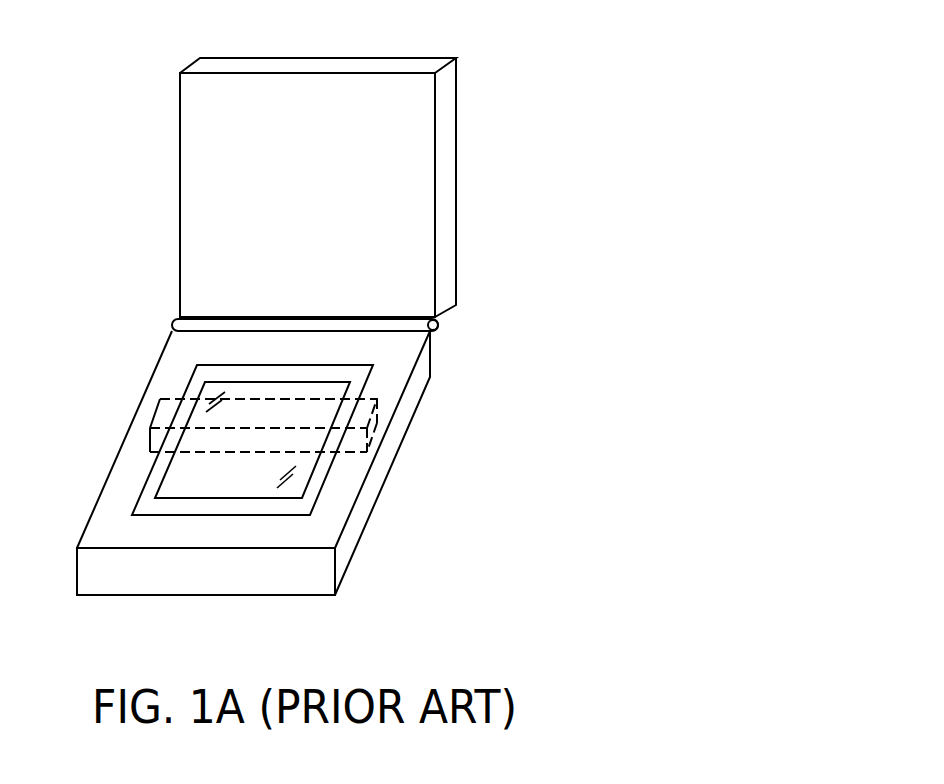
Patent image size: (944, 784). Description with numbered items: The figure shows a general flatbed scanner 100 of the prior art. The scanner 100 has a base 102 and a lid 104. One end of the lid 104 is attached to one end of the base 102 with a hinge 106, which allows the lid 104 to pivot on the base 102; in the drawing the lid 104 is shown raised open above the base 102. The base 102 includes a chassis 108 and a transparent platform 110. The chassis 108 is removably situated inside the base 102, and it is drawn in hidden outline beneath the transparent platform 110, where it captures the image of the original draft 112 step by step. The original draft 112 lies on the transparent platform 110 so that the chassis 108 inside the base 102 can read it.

The scanner 100 is at (584, 44).
The base 102 is at (320, 573).
The lid 104 is at (443, 145).
The hinge 106 is at (438, 327).
The chassis 108 is at (157, 412).
The transparent platform 110 is at (358, 385).
The original draft 112 is at (313, 470).